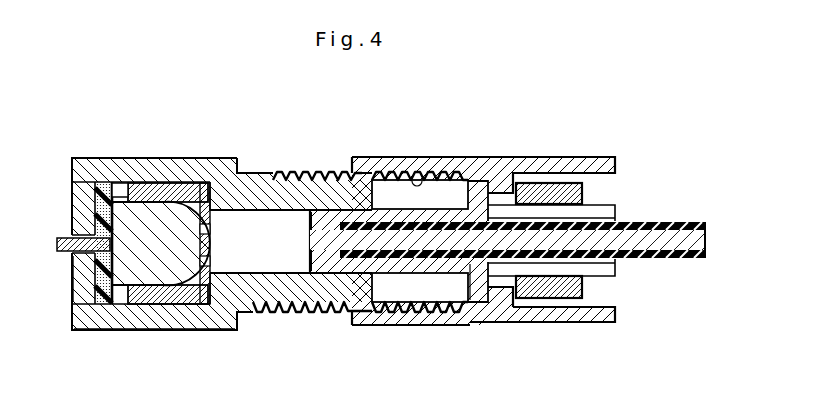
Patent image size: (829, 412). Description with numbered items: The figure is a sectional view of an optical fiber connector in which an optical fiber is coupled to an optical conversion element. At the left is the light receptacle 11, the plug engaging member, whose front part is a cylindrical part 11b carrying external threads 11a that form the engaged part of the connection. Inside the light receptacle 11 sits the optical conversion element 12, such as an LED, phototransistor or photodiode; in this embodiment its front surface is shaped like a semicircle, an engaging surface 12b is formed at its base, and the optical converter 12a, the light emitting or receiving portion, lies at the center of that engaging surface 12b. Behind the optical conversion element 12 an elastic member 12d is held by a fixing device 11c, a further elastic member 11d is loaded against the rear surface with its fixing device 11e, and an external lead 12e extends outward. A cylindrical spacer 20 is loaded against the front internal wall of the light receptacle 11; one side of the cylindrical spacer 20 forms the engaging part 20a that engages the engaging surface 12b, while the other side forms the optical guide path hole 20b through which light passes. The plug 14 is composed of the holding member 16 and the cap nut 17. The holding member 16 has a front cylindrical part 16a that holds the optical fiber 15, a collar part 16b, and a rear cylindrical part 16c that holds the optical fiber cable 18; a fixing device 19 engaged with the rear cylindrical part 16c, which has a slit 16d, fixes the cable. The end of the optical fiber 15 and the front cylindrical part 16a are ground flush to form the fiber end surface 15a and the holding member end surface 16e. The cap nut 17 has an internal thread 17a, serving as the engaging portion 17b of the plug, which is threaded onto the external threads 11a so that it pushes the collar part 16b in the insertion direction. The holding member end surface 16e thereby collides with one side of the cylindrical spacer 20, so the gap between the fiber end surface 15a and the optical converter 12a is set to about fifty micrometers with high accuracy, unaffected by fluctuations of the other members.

The light receptacle 11 is at (215, 157).
The external threads 11a is at (352, 170).
The cylindrical part 11b is at (318, 314).
The fixing device 11c is at (82, 282).
The elastic member 11d is at (239, 168).
The fixing device 11e is at (96, 331).
The optical conversion element 12 is at (171, 182).
The optical converter 12a is at (213, 245).
The engaging surface 12b is at (143, 305).
The elastic member 12d is at (95, 210).
The external lead 12e is at (58, 253).
The plug 14 is at (473, 160).
The optical fiber 15 is at (668, 261).
The fiber end surface 15a is at (312, 171).
The holding member 16 is at (444, 278).
The front cylindrical part 16a is at (393, 282).
The collar part 16b is at (478, 295).
The rear cylindrical part 16c is at (607, 283).
The slit 16d is at (603, 212).
The holding member end surface 16e is at (308, 258).
The cap nut 17 is at (551, 157).
The internal thread 17a is at (505, 297).
The engaging portion 17b is at (418, 171).
The optical fiber cable 18 is at (679, 220).
The fixing device 19 is at (566, 300).
The cylindrical spacer 20 is at (196, 287).
The engaging part 20a is at (134, 182).
The optical guide path hole 20b is at (242, 322).